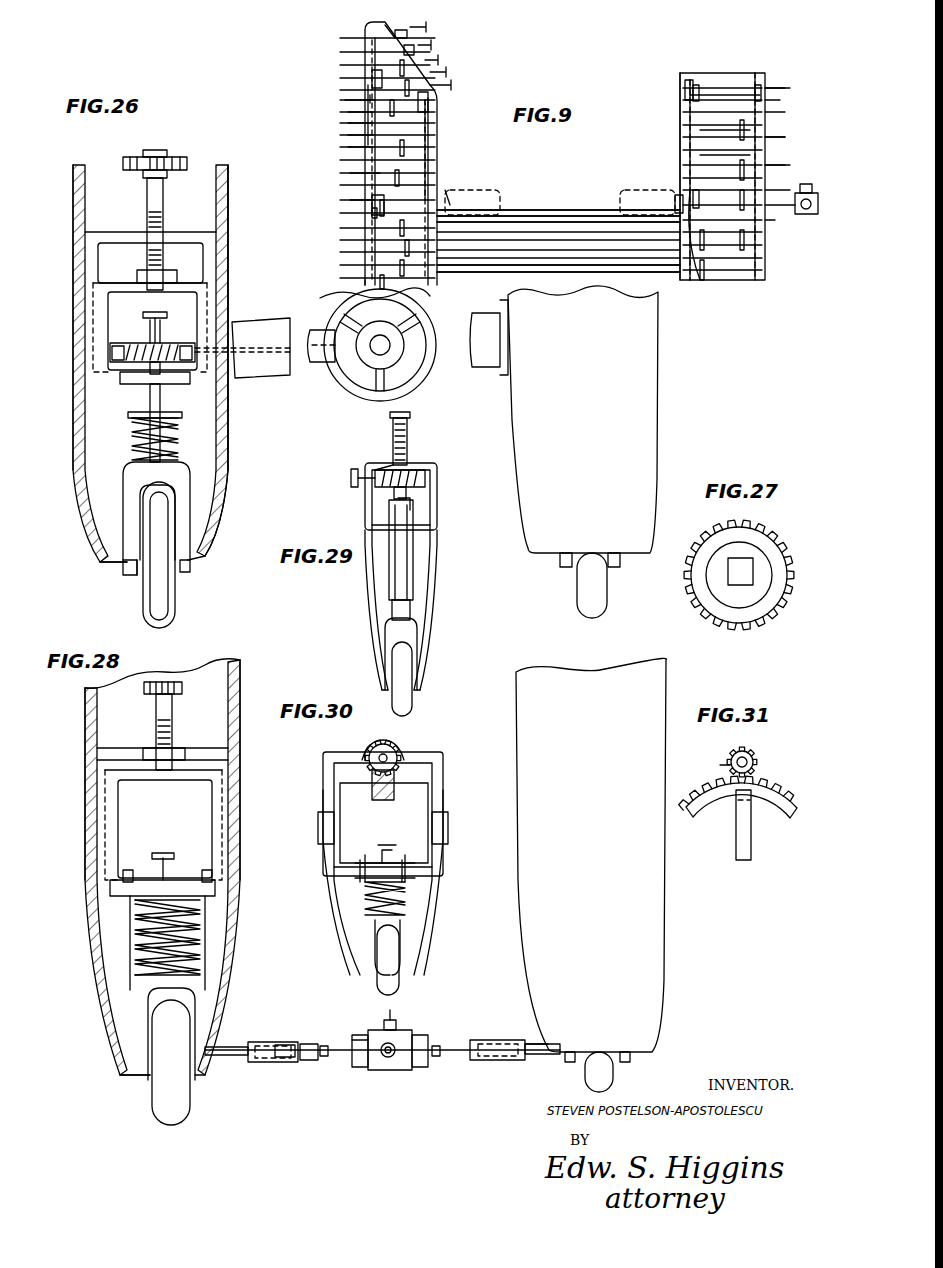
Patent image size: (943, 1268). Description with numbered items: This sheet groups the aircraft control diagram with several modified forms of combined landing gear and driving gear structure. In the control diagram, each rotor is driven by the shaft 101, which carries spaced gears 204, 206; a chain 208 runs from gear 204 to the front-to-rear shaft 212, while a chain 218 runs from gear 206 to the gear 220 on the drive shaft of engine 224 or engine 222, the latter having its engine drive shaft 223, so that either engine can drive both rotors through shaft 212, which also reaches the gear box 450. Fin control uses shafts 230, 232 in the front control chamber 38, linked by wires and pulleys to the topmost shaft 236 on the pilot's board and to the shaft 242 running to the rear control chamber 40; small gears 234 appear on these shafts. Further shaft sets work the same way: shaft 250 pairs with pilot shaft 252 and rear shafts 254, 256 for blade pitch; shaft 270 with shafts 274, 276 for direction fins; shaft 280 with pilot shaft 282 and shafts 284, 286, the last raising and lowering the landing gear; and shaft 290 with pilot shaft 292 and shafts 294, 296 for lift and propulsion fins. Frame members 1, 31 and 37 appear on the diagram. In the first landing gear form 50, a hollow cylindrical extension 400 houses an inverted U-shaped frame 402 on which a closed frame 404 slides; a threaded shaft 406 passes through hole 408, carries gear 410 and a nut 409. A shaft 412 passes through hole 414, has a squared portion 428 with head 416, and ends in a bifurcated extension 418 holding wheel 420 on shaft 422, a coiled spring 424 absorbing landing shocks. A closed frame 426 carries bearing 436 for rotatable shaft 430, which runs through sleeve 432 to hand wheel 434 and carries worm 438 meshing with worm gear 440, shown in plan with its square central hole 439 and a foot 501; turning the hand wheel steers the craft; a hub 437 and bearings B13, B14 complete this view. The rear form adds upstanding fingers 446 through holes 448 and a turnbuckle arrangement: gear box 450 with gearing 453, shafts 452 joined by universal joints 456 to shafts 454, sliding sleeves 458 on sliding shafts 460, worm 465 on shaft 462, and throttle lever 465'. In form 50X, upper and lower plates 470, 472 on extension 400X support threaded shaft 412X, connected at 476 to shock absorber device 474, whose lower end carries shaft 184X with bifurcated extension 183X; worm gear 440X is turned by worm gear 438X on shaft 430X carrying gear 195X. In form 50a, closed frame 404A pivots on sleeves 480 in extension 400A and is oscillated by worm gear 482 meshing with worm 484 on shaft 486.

In FIG. 9, the shaft 1 is at (776, 80).
In FIG. 9, the frame member 31 is at (755, 102).
In FIG. 9, the frame member 37 is at (680, 100).
In FIG. 9, the front control chamber 38 is at (372, 212).
In FIG. 9, the rear control chamber 40 is at (770, 225).
In FIG. 27, the combined landing gear and driving gear structure 50 is at (670, 542).
In FIG. 29, the combined landing gear and driving gear structure 50X is at (448, 688).
In FIG. 30, the combined landing gear and driving gear structure 50a is at (448, 962).
In FIG. 9, the shaft 101 is at (345, 100).
In FIG. 29, the bifurcated extension 183X is at (420, 645).
In FIG. 29, the shaft 184X is at (412, 615).
In FIG. 29, the gear 195X is at (351, 479).
In FIG. 9, the gear 204 is at (367, 92).
In FIG. 9, the gear 206 is at (430, 102).
In FIG. 9, the chain 208 is at (560, 210).
In FIG. 9, the shaft 212 is at (440, 60).
In FIG. 9, the chain 218 is at (435, 160).
In FIG. 9, the gear 220 is at (693, 250).
In FIG. 9, the engine 222 is at (647, 202).
In FIG. 9, the engine drive shaft 223 is at (678, 195).
In FIG. 9, the engine 224 is at (472, 202).
In FIG. 9, the shaft 230 is at (348, 112).
In FIG. 9, the shaft 232 is at (348, 135).
In FIG. 9, the gear 234 is at (372, 75).
In FIG. 9, the shaft 236 is at (405, 35).
In FIG. 9, the shaft 242 is at (430, 288).
In FIG. 9, the shaft 250 is at (348, 123).
In FIG. 9, the shaft 252 is at (432, 45).
In FIG. 9, the shaft 254 is at (615, 280).
In FIG. 9, the shaft 256 is at (775, 103).
In FIG. 9, the shaft 270 is at (348, 147).
In FIG. 9, the shaft 274 is at (665, 282).
In FIG. 9, the shaft 276 is at (780, 135).
In FIG. 9, the shaft 280 is at (350, 173).
In FIG. 9, the shaft 282 is at (448, 72).
In FIG. 9, the shaft 284 is at (592, 232).
In FIG. 9, the shaft 286 is at (786, 165).
In FIG. 9, the shaft 290 is at (350, 205).
In FIG. 9, the shaft 292 is at (452, 85).
In FIG. 9, the shaft 294 is at (530, 216).
In FIG. 9, the shaft 296 is at (781, 180).
In FIG. 26, the hollow cylindrical extension 400 is at (78, 312).
In FIG. 28, the hollow cylindrical extension 400 is at (86, 850).
In FIG. 27, the hollow cylindrical extension 400 is at (660, 442).
In FIG. 31, the hollow cylindrical extension 400 is at (665, 918).
In FIG. 29, the cylindrical extension 400X is at (440, 560).
In FIG. 30, the cylindrical extension 400A is at (445, 895).
In FIG. 26, the inverted U-shaped frame 402 is at (98, 265).
In FIG. 28, the inverted U-shaped frame 402 is at (140, 726).
In FIG. 26, the closed rectangular shaped frame 404 is at (108, 328).
In FIG. 30, the closed frame 404A is at (430, 790).
In FIG. 26, the threaded shaft 406 is at (147, 207).
In FIG. 28, the threaded shaft 406 is at (172, 710).
In FIG. 26, the hole 408 is at (163, 225).
In FIG. 26, the nut 409 is at (165, 275).
In FIG. 26, the gear 410 is at (187, 160).
In FIG. 28, the gear 410 is at (182, 688).
In FIG. 26, the shaft 412 is at (148, 395).
In FIG. 28, the shaft 412 is at (170, 864).
In FIG. 29, the threaded shaft 412X is at (408, 437).
In FIG. 26, the hole 414 is at (135, 418).
In FIG. 26, the head 416 is at (167, 314).
In FIG. 26, the bifurcated extension 418 is at (125, 568).
In FIG. 27, the bifurcated extension 418 is at (560, 565).
In FIG. 26, the wheel 420 is at (175, 605).
In FIG. 27, the wheel 420 is at (607, 590).
In FIG. 31, the wheel 420 is at (585, 1085).
In FIG. 26, the shaft 422 is at (134, 575).
In FIG. 26, the coiled spring 424 is at (190, 452).
In FIG. 26, the closed frame 426 is at (150, 336).
In FIG. 26, the squared portion 428 is at (120, 380).
In FIG. 26, the rotatable shaft 430 is at (225, 478).
In FIG. 29, the shaft 430X is at (440, 470).
In FIG. 26, the sleeve 432 is at (270, 325).
In FIG. 29, the hand wheel 434 is at (425, 392).
In FIG. 26, the bearing 436 is at (110, 352).
In FIG. 29, the hub 437 is at (365, 365).
In FIG. 26, the worm 438 is at (112, 360).
In FIG. 29, the worm gear 438X is at (426, 478).
In FIG. 27, the square central hole 439 is at (730, 585).
In FIG. 26, the worm gear 440 is at (150, 368).
In FIG. 27, the worm gear 440 is at (740, 590).
In FIG. 29, the worm gear 440X is at (406, 492).
In FIG. 28, the upstanding fingers 446 is at (212, 925).
In FIG. 28, the holes 448 is at (110, 888).
In FIG. 30, the gear box 450 is at (398, 1036).
In FIG. 30, the shaft 452 is at (325, 1046).
In FIG. 30, the gearing 453 is at (384, 1030).
In FIG. 30, the shaft 454 is at (288, 1045).
In FIG. 30, the universal joint 456 is at (310, 1060).
In FIG. 30, the sliding sleeve 458 is at (278, 1063).
In FIG. 30, the sliding shaft 460 is at (258, 1058).
In FIG. 31, the sliding shaft 460 is at (542, 1066).
In FIG. 30, the shaft 462 is at (392, 1057).
In FIG. 9, the worm 465 is at (795, 192).
In FIG. 30, the worm 465 is at (365, 1072).
In FIG. 30, the throttle lever 465' is at (429, 1005).
In FIG. 29, the upper plate 470 is at (383, 465).
In FIG. 29, the lower plate 472 is at (412, 505).
In FIG. 29, the shock absorber device 474 is at (389, 580).
In FIG. 29, the connection 476 is at (358, 483).
In FIG. 30, the sleeves 480 is at (320, 830).
In FIG. 30, the worm gear 482 is at (380, 800).
In FIG. 31, the worm gear 482 is at (782, 790).
In FIG. 30, the worm 484 is at (400, 748).
In FIG. 31, the worm 484 is at (752, 752).
In FIG. 30, the shaft 486 is at (366, 752).
In FIG. 31, the shaft 486 is at (730, 764).
In FIG. 26, the foot 501 is at (88, 569).
In FIG. 26, the bearing B13 is at (186, 362).
In FIG. 26, the fork body B14 is at (130, 485).